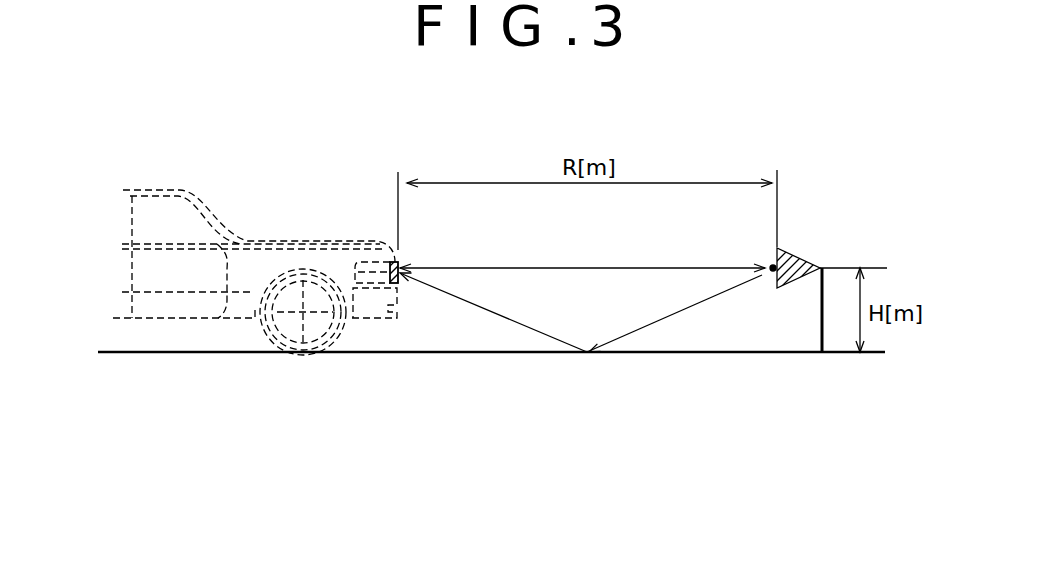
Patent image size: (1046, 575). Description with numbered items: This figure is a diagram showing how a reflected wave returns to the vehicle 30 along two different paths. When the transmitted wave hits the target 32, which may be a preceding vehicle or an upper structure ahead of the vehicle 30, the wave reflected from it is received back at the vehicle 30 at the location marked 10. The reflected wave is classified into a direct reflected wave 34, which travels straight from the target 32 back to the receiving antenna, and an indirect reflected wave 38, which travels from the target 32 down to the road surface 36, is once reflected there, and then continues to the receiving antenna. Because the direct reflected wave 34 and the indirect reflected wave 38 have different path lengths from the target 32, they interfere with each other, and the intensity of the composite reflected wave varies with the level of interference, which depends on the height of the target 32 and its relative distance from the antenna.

The radar device 10 is at (400, 283).
The vehicle 30 is at (263, 240).
The target 32 is at (803, 250).
The direct reflected wave 34 is at (537, 262).
The road surface 36 is at (717, 353).
The indirect reflected wave 38 is at (542, 322).